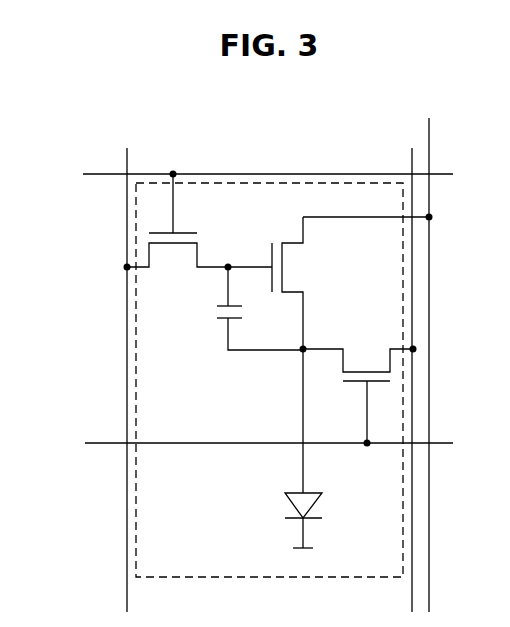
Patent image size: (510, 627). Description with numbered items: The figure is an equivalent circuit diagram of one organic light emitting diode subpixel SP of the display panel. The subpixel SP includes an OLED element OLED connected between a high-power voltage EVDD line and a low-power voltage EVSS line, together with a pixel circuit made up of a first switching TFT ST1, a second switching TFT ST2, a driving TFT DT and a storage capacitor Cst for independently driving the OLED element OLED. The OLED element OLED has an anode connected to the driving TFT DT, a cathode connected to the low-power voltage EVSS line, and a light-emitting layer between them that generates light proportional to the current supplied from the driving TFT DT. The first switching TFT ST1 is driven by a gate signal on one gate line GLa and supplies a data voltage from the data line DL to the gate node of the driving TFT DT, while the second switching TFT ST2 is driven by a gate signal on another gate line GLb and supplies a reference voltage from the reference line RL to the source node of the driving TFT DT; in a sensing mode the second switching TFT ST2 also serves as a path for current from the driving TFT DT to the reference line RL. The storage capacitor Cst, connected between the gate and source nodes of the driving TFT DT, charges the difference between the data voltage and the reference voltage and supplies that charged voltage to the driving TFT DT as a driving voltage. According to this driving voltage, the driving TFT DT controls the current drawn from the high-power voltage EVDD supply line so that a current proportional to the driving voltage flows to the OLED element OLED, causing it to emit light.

The data line DL is at (128, 369).
The reference line RL is at (411, 369).
The high-power voltage line EVDD is at (440, 353).
The gate line GLa is at (246, 174).
The gate line GLb is at (246, 443).
The subpixel SP is at (271, 183).
The first switching TFT ST1 is at (177, 225).
The storage capacitor Cst is at (242, 308).
The driving TFT DT is at (328, 355).
The second switching TFT ST2 is at (358, 396).
The OLED element OLED is at (275, 520).
The low-power voltage line EVSS is at (330, 548).